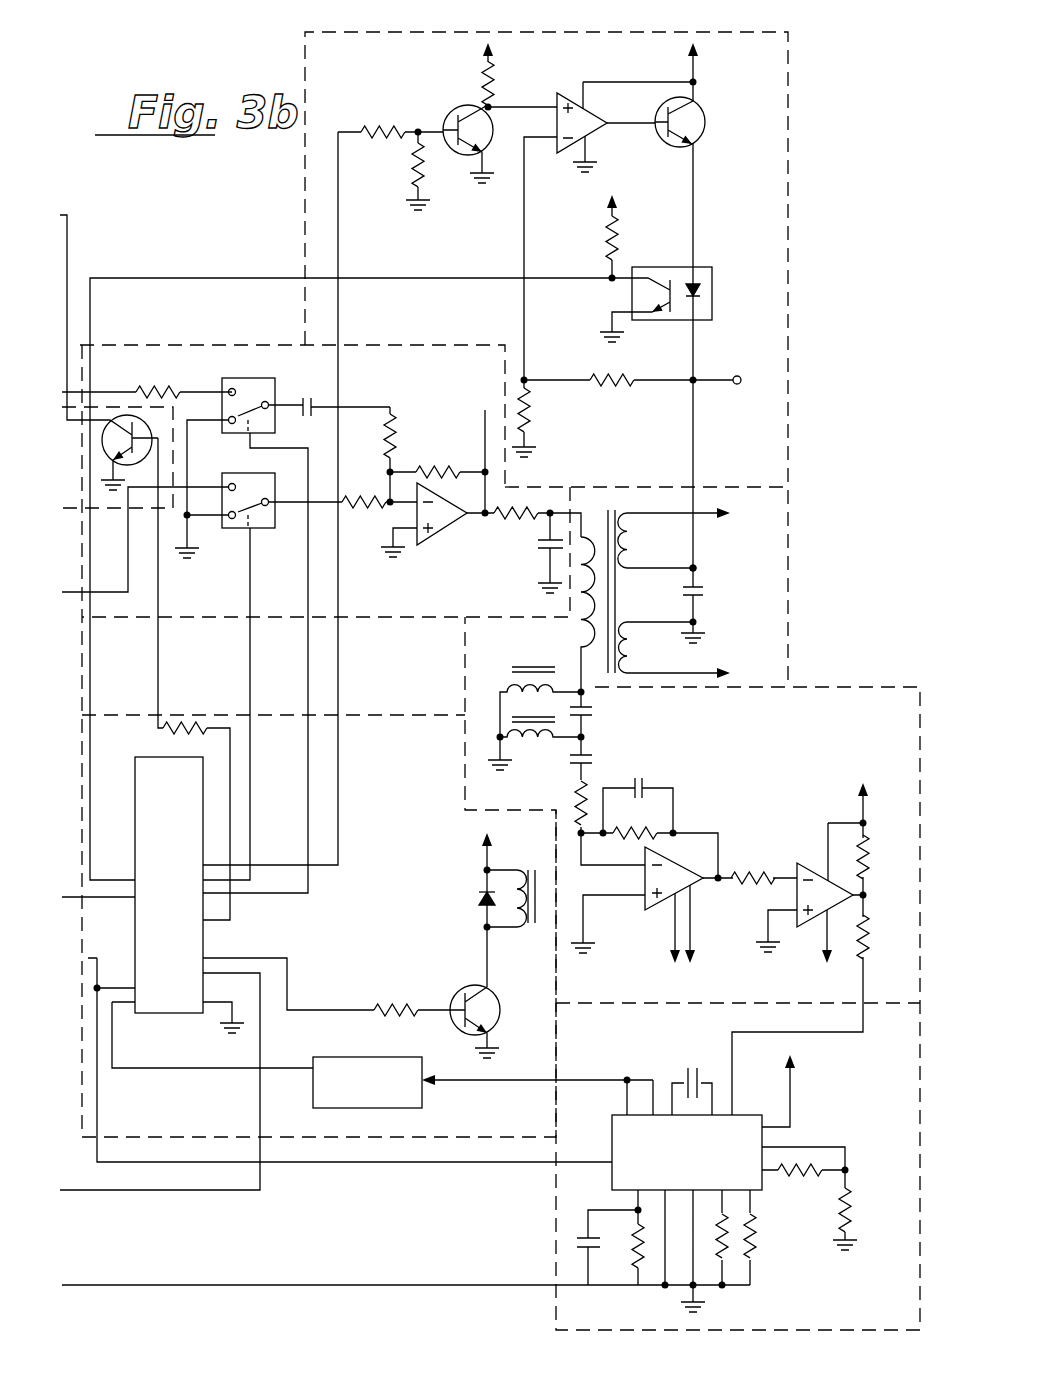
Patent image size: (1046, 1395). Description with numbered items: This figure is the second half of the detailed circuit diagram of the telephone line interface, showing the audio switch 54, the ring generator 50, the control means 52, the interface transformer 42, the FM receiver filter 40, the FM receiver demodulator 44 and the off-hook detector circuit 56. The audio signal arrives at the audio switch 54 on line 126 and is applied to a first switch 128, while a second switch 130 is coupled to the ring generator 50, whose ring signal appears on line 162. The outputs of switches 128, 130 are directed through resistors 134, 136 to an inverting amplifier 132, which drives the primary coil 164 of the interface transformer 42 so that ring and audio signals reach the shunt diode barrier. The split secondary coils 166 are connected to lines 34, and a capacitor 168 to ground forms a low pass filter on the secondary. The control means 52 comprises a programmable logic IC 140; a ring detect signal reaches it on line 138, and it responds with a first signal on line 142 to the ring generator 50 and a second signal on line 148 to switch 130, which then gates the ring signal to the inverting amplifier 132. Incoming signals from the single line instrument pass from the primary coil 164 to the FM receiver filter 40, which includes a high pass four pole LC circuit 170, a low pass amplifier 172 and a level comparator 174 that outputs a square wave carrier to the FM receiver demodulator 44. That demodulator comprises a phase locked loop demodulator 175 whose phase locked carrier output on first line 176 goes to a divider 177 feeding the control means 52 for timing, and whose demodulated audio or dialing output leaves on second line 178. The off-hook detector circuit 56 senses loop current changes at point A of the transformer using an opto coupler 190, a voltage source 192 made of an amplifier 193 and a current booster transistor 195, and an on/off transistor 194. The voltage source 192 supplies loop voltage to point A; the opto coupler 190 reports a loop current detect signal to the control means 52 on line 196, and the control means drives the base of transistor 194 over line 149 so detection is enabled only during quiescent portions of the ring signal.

The lines 34 is at (735, 670).
The FM receiver filter 40 is at (846, 677).
The interface transformer 42 is at (802, 525).
The FM receiver demodulator 44 is at (545, 1227).
The ring generator 50 is at (113, 524).
The control means 52 is at (125, 706).
The audio switch 54 is at (402, 335).
The off-hook detector circuit 56 is at (797, 167).
The line 126 is at (150, 592).
The first switch 128 is at (262, 522).
The second switch 130 is at (258, 388).
The inverting amplifier 132 is at (440, 535).
The resistor 134 is at (356, 500).
The resistor 136 is at (374, 400).
The line 138 is at (118, 899).
The programmable logic IC 140 is at (197, 948).
The line 142 is at (162, 668).
The line 148 is at (308, 647).
The line 149 is at (341, 655).
The line 162 is at (114, 392).
The primary coil 164 is at (593, 622).
The split secondary coils 166 is at (655, 583).
The capacitor 168 is at (710, 592).
The four pole LC circuit 170 is at (542, 742).
The amplifier 172 is at (654, 918).
The level comparator 174 is at (800, 850).
The phase locked loop demodulator 175 is at (747, 1172).
The first line 176 is at (586, 1079).
The divider 177 is at (362, 1057).
The second line 178 is at (356, 1285).
The opto coupler 190 is at (713, 275).
The voltage source 192 is at (550, 88).
The amplifier 193 is at (595, 131).
The on/off transistor 194 is at (442, 101).
The current booster transistor 195 is at (688, 118).
The line 196 is at (252, 278).
The point A is at (697, 568).